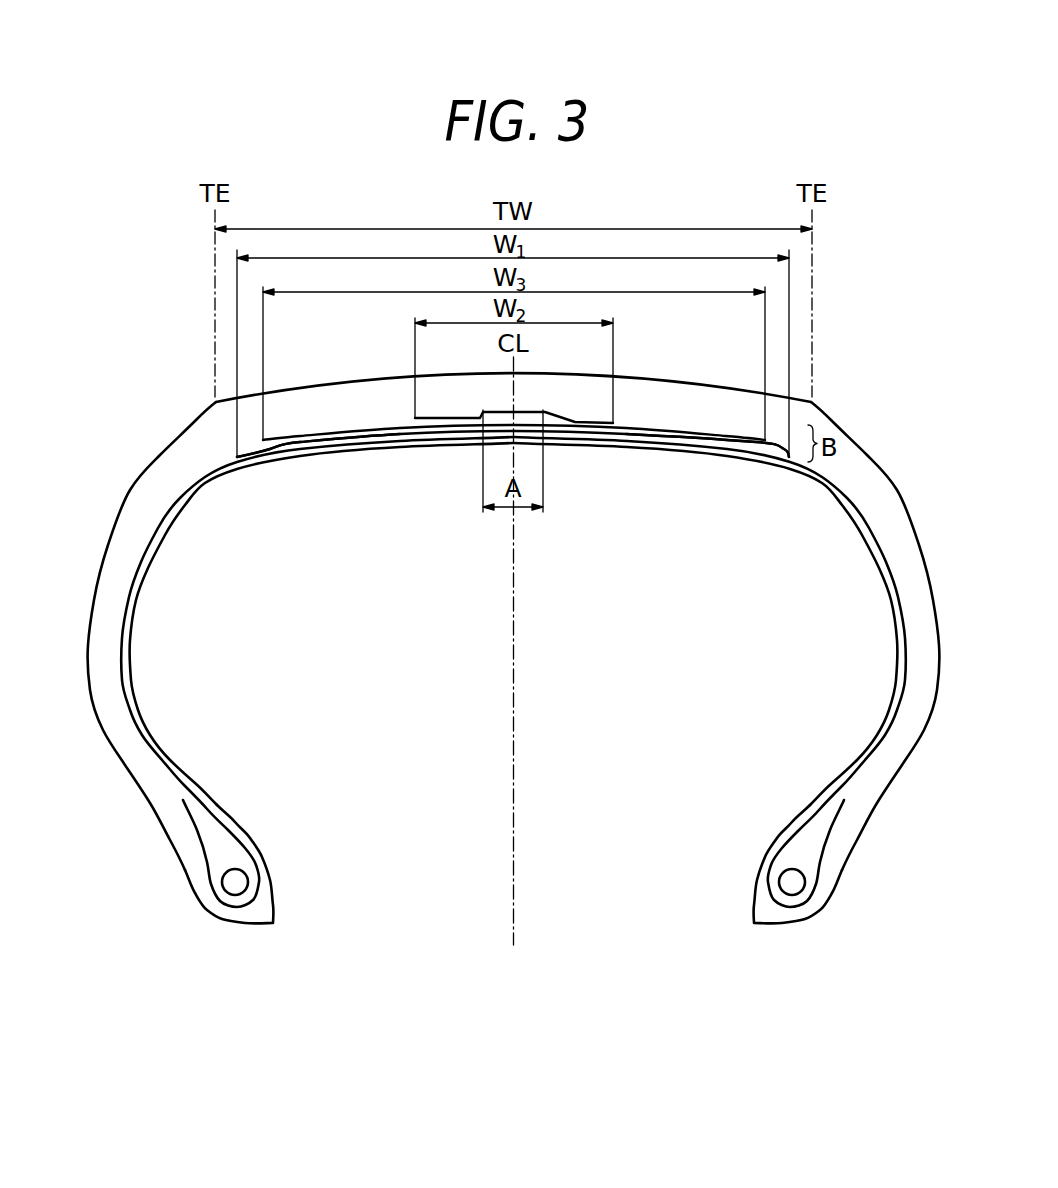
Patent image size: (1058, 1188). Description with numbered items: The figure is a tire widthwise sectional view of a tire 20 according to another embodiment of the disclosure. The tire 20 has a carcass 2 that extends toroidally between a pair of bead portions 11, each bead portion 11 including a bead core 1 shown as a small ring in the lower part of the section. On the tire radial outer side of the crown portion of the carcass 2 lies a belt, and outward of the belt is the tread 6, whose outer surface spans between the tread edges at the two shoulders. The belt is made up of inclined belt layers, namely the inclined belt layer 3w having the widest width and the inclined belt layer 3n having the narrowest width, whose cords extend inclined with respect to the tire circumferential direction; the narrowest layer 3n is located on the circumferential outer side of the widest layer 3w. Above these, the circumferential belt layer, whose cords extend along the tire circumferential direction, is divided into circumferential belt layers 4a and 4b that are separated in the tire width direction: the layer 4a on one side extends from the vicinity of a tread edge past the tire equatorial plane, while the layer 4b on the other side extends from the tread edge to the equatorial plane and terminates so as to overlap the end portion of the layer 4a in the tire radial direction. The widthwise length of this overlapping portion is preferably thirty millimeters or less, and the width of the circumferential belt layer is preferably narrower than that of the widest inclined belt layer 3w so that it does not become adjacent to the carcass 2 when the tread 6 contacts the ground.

The bead core 1 is at (240, 881).
The carcass 2 is at (127, 597).
The inclined belt layer having widest width 3w is at (397, 437).
The inclined belt layer having narrowest width 3n is at (448, 425).
The circumferential belt layer 4a is at (315, 433).
The circumferential belt layer 4b is at (685, 433).
The tread 6 is at (683, 398).
The bead portion 11 is at (152, 837).
The tire 20 is at (880, 360).